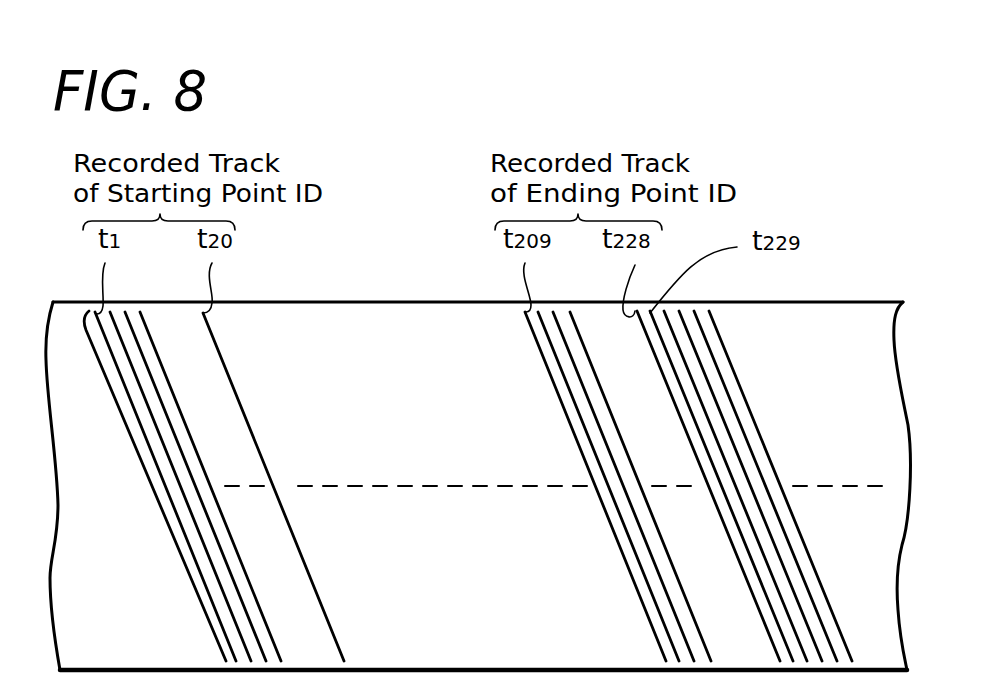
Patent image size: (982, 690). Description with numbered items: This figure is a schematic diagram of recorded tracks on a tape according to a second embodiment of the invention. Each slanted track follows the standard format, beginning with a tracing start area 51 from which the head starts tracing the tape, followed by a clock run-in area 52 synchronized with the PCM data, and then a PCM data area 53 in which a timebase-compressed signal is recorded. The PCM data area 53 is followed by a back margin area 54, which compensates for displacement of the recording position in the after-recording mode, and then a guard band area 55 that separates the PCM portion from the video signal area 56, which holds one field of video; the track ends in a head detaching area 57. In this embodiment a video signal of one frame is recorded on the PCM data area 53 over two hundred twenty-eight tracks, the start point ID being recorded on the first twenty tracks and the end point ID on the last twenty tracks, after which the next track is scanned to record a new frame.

The tracing start area 51 is at (228, 664).
The clock run-in area 52 is at (165, 486).
The PCM data area 53 is at (180, 486).
The back margin area 54 is at (195, 486).
The guard band area 55 is at (210, 486).
The video signal area 56 is at (149, 476).
The head detaching area 57 is at (182, 487).